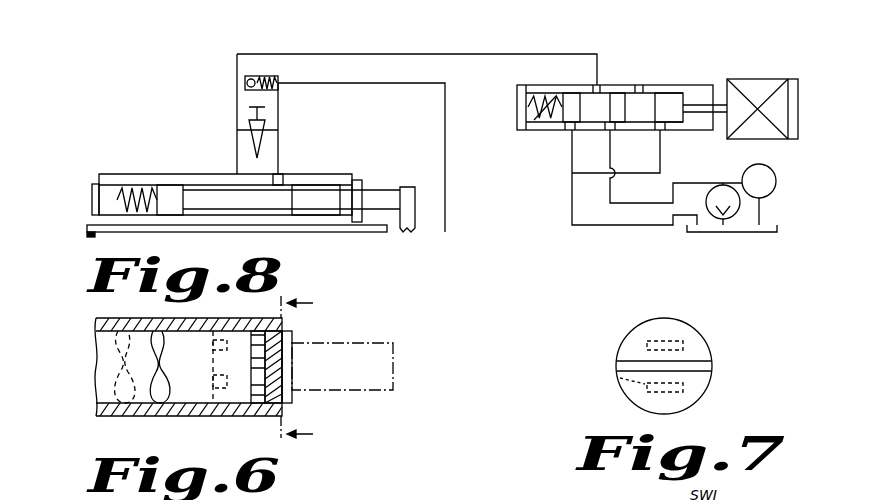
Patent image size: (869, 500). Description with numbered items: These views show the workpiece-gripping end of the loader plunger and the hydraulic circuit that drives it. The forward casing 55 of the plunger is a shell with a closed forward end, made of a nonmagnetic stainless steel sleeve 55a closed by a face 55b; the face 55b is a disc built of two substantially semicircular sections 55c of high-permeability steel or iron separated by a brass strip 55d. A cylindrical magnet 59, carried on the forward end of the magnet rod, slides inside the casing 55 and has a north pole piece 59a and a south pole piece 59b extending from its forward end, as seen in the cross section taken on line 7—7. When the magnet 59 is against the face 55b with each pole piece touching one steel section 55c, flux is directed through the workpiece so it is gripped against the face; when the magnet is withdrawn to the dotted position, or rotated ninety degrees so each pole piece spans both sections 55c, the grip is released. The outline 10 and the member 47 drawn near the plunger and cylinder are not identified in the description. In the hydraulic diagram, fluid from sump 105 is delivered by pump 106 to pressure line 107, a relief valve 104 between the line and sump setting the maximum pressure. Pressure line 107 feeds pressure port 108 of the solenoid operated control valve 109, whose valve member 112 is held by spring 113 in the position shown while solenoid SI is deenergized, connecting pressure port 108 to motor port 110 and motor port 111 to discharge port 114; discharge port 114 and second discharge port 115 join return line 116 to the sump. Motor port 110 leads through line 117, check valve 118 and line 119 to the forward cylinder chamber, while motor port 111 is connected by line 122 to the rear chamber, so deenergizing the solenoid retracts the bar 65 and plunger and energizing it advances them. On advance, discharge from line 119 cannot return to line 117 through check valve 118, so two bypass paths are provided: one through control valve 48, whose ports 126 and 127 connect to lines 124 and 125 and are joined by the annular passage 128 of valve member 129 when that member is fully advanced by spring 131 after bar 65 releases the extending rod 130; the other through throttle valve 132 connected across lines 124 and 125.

In FIG. 8, the line 117 is at (441, 56).
In FIG. 8, the check valve 118 is at (268, 78).
In FIG. 8, the line 119 is at (377, 84).
In FIG. 8, the line 124 is at (237, 118).
In FIG. 8, the line 125 is at (280, 105).
In FIG. 8, the throttle valve 132 is at (264, 130).
In FIG. 8, the port 126 is at (238, 172).
In FIG. 8, the port 127 is at (284, 176).
In FIG. 8, the annular passage 128 is at (205, 186).
In FIG. 8, the valve member 129 is at (214, 216).
In FIG. 8, the extending rod 130 is at (374, 189).
In FIG. 8, the spring 131 is at (125, 185).
In FIG. 8, the control valve 48 is at (342, 175).
In FIG. 8, the base plate 47 is at (367, 233).
In FIG. 8, the bar 65 is at (416, 230).
In FIG. 8, the motor port 110 is at (594, 84).
In FIG. 8, the motor port 111 is at (638, 85).
In FIG. 8, the valve member 112 is at (652, 100).
In FIG. 8, the line 122 is at (643, 85).
In FIG. 8, the solenoid operated control valve 109 is at (690, 86).
In FIG. 8, the solenoid SI is at (755, 78).
In FIG. 8, the spring 113 is at (549, 110).
In FIG. 8, the second discharge port 115 is at (570, 132).
In FIG. 8, the pressure port 108 is at (612, 132).
In FIG. 8, the discharge port 114 is at (662, 132).
In FIG. 8, the pressure line 107 is at (683, 183).
In FIG. 8, the pump 106 is at (777, 181).
In FIG. 8, the sump 105 is at (780, 232).
In FIG. 8, the relief valve 104 is at (735, 232).
In FIG. 8, the return line 116 is at (591, 226).
In FIG. 6, the casing 55 is at (191, 418).
In FIG. 6, the nonmagnetic stainless steel sleeve 55a is at (166, 318).
In FIG. 6, the face 55b is at (285, 406).
In FIG. 7, the face 55b is at (710, 390).
In FIG. 6, the semicircular sections 55c is at (272, 391).
In FIG. 7, the semicircular sections 55c is at (700, 350).
In FIG. 6, the brass strip 55d is at (272, 367).
In FIG. 7, the brass strip 55d is at (712, 366).
In FIG. 6, the magnet 59 is at (150, 405).
In FIG. 6, the north pole piece 59a is at (252, 312).
In FIG. 7, the north pole piece 59a is at (680, 338).
In FIG. 6, the south pole piece 59b is at (250, 375).
In FIG. 7, the south pole piece 59b is at (607, 378).
In FIG. 6, the apparatus 10 is at (380, 345).
In FIG. 6, the section line 7- 7 is at (306, 369).